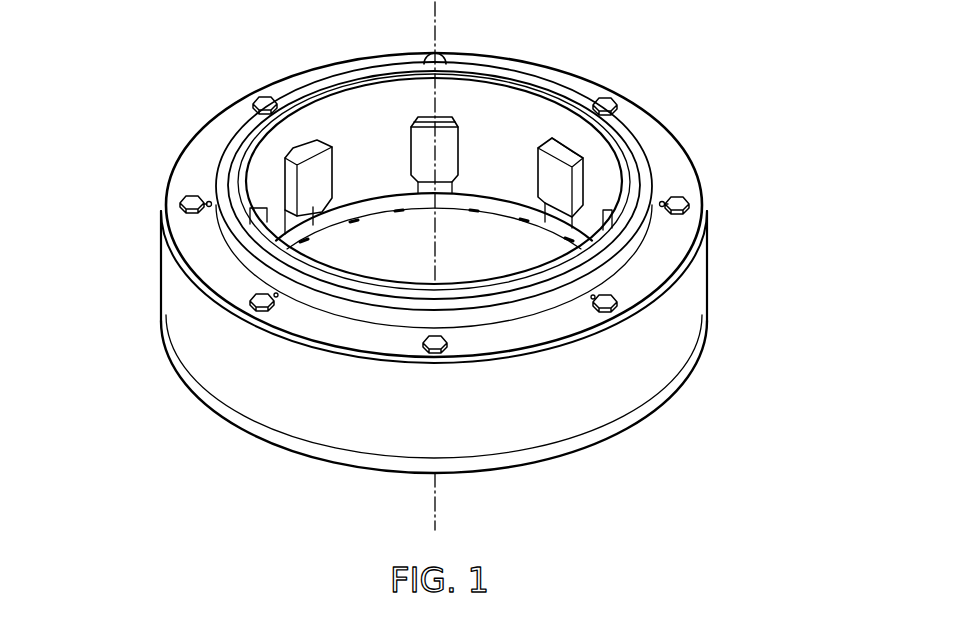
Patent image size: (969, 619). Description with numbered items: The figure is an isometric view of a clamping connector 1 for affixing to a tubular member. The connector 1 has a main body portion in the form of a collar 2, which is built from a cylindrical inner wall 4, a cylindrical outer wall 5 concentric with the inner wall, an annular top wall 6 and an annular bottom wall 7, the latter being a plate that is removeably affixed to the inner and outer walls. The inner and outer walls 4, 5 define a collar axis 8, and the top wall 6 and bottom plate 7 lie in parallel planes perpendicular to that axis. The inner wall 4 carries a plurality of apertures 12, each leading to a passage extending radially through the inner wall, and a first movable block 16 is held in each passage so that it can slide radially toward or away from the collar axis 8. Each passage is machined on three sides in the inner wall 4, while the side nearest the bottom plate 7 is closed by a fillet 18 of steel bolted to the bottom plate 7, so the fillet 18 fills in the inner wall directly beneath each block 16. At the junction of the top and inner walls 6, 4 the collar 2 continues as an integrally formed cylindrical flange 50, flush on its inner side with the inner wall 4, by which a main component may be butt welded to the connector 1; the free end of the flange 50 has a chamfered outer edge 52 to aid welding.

The clamping connector 1 is at (190, 82).
The collar 2 is at (152, 206).
The cylindrical inner wall 4 is at (318, 110).
The cylindrical outer wall 5 is at (177, 299).
The annular top wall 6 is at (690, 180).
The annular bottom wall 7 is at (633, 415).
The collar axis 8 is at (437, 17).
The aperture 12 is at (460, 147).
The first movable block 16 is at (427, 120).
The fillet 18 is at (447, 186).
The cylindrical flange 50 is at (613, 248).
The chamfered outer edge 52 is at (637, 173).